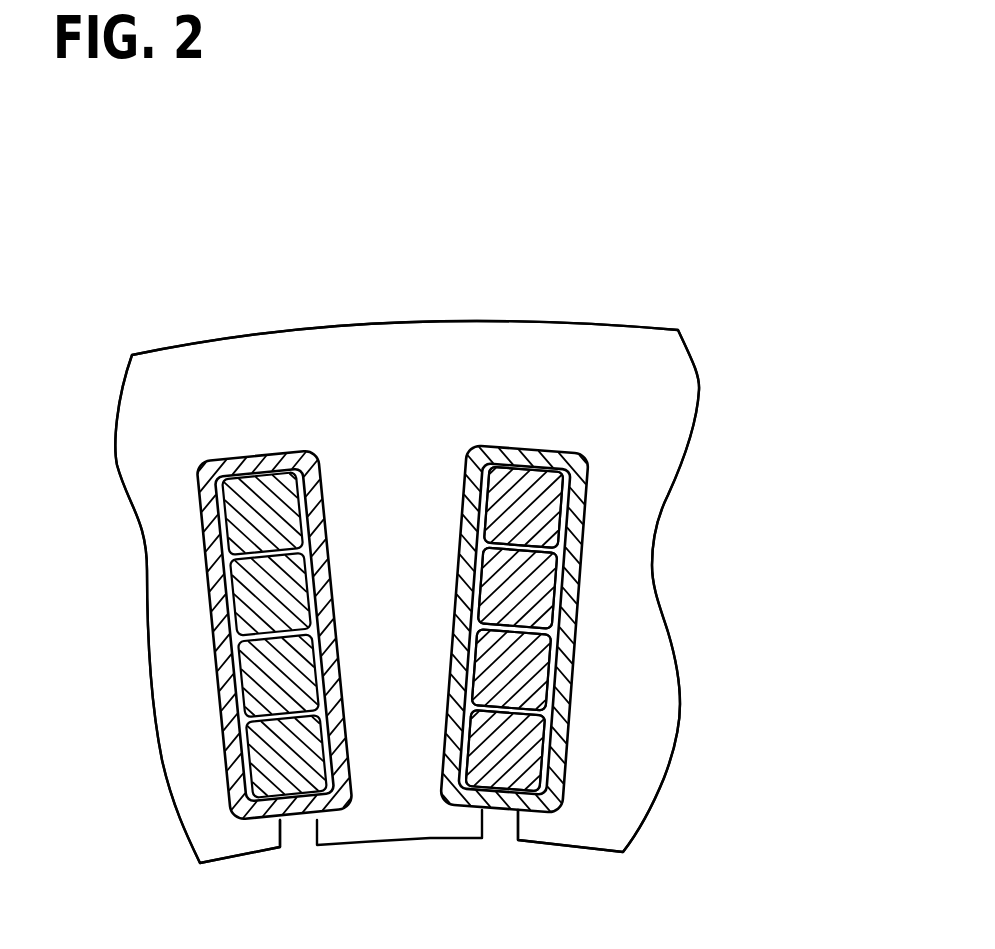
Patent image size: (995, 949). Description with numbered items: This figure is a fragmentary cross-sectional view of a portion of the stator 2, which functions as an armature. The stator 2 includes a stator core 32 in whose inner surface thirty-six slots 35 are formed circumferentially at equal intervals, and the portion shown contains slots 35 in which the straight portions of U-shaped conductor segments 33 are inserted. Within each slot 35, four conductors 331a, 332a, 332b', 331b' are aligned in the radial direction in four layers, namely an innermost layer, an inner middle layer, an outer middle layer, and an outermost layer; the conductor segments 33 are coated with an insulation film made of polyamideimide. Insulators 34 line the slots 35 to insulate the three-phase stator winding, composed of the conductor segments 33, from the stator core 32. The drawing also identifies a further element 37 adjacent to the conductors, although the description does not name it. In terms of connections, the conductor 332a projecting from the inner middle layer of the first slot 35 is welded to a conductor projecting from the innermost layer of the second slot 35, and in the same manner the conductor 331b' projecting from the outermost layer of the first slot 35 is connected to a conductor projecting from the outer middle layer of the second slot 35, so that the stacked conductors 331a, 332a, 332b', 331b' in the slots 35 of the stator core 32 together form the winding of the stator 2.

The stator 2 is at (667, 257).
The stator core 32 is at (425, 355).
The conductor segments 33 is at (820, 485).
The conductor 331a is at (520, 767).
The conductor 331b' is at (653, 507).
The conductor 332a is at (527, 680).
The conductor 332b' is at (650, 587).
The insulators 34 is at (577, 448).
The slots 35 is at (499, 810).
The insulating sheet 37 is at (215, 512).